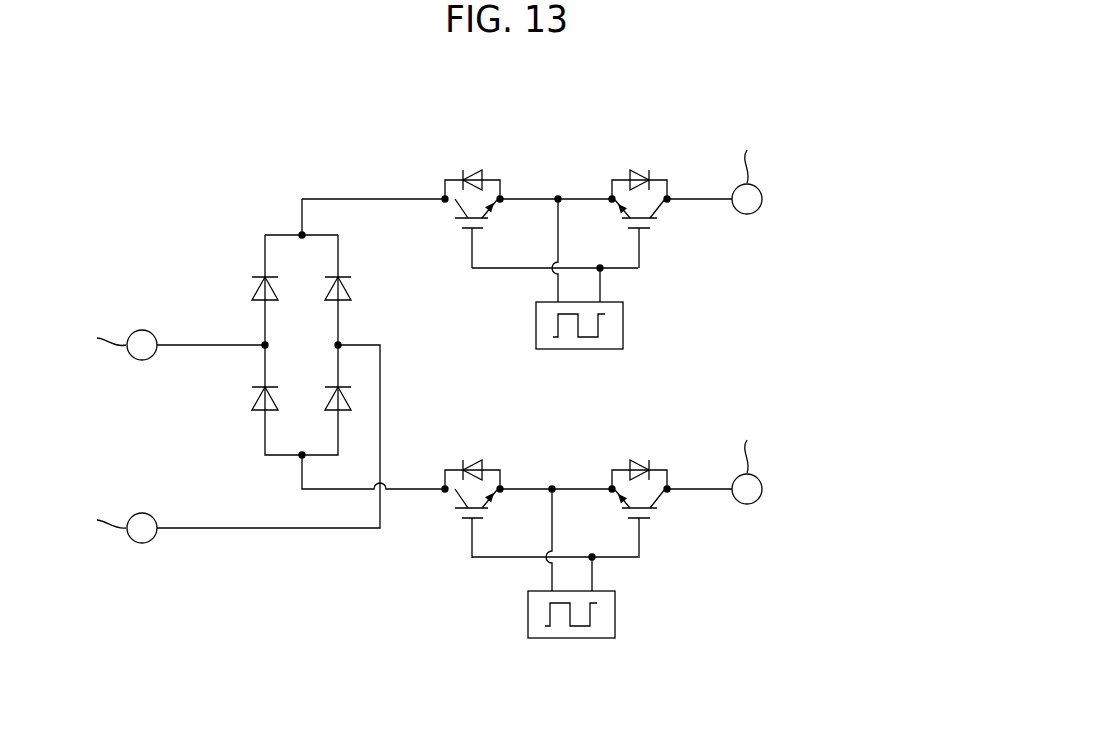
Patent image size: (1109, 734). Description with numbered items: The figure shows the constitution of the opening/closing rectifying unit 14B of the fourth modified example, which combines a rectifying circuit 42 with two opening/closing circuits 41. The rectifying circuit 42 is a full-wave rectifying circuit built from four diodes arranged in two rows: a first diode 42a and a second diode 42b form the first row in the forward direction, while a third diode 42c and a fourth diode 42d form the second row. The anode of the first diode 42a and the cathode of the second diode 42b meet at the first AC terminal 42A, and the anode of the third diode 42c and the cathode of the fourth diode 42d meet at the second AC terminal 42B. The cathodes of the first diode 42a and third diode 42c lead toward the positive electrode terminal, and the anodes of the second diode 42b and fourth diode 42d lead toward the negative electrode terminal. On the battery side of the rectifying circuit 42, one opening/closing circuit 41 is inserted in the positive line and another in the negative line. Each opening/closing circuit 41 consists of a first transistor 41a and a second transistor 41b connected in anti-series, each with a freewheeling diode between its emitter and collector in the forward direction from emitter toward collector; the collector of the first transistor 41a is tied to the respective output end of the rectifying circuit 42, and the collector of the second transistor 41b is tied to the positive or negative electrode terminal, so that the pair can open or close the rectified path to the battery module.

The opening/closing rectifying unit 14B is at (812, 181).
The opening/closing circuit 41 is at (668, 162).
The first transistor 41a is at (463, 232).
The second transistor 41b is at (651, 230).
The rectifying circuit 42 is at (277, 220).
The first diode 42a is at (258, 276).
The second diode 42b is at (258, 387).
The third diode 42c is at (349, 274).
The fourth diode 42d is at (352, 385).
The first AC terminal 42A is at (261, 343).
The second AC terminal 42B is at (341, 341).